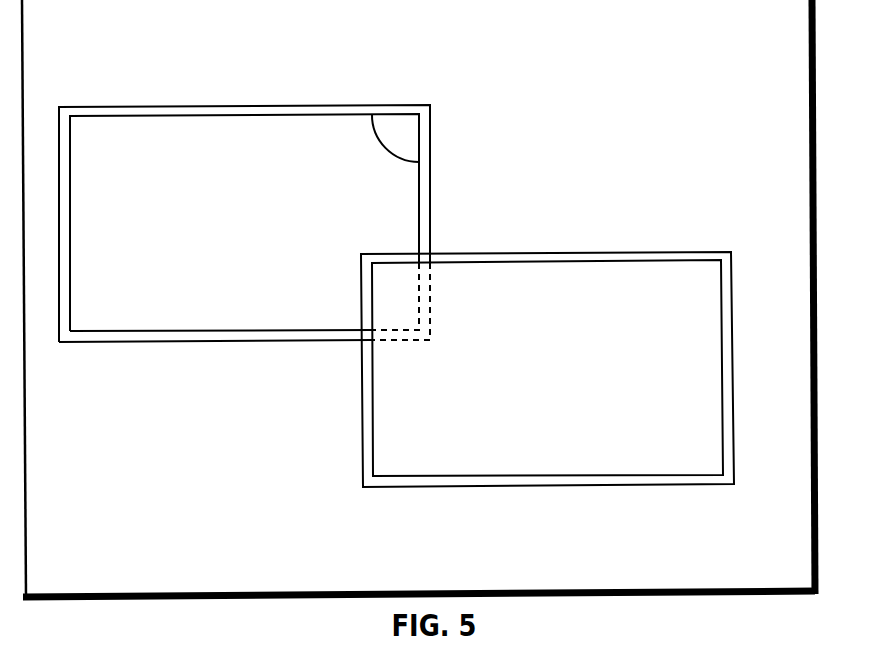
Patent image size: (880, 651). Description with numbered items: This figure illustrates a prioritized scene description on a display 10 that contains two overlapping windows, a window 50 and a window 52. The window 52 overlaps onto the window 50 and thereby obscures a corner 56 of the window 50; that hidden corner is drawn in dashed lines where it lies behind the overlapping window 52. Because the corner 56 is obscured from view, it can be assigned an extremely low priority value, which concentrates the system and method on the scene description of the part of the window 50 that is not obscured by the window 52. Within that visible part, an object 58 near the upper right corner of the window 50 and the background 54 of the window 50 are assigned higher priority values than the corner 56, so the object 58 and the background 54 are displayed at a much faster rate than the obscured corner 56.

The display 10 is at (815, 30).
The window 50 is at (207, 107).
The window 52 is at (563, 256).
The background 54 is at (109, 189).
The corner 56 is at (397, 302).
The object 58 is at (407, 133).